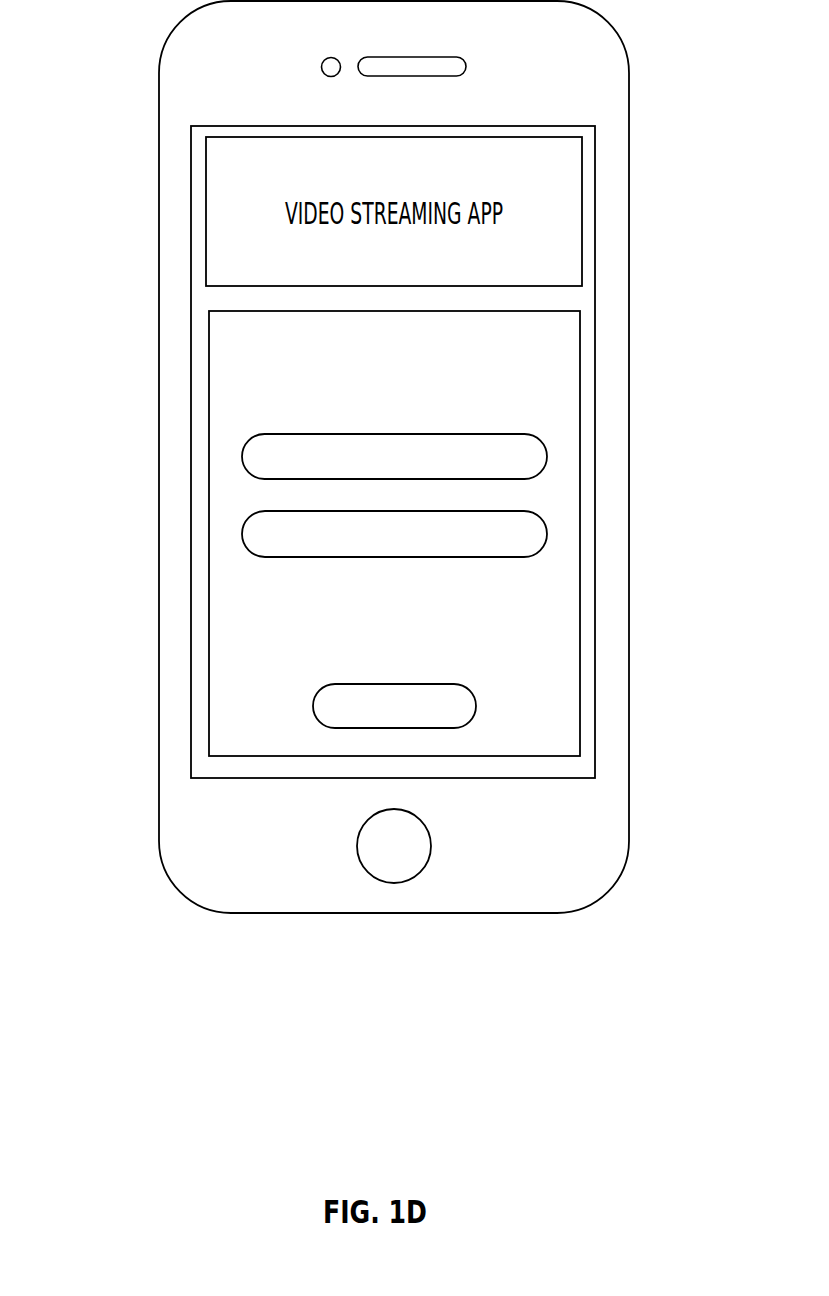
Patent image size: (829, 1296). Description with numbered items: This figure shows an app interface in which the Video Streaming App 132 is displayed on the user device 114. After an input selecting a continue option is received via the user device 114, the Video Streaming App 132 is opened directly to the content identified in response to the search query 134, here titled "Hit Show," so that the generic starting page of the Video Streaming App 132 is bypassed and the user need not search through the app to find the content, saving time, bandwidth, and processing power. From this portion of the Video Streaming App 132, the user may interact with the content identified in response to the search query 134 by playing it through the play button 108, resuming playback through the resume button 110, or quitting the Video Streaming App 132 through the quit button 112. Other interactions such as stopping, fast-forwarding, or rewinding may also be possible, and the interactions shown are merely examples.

The play button 108 is at (547, 457).
The resume button 110 is at (547, 535).
The quit button 112 is at (476, 705).
The user device 114 is at (159, 455).
The Video Streaming App 132 is at (192, 137).
The content identified in response to the search query 134 is at (208, 662).